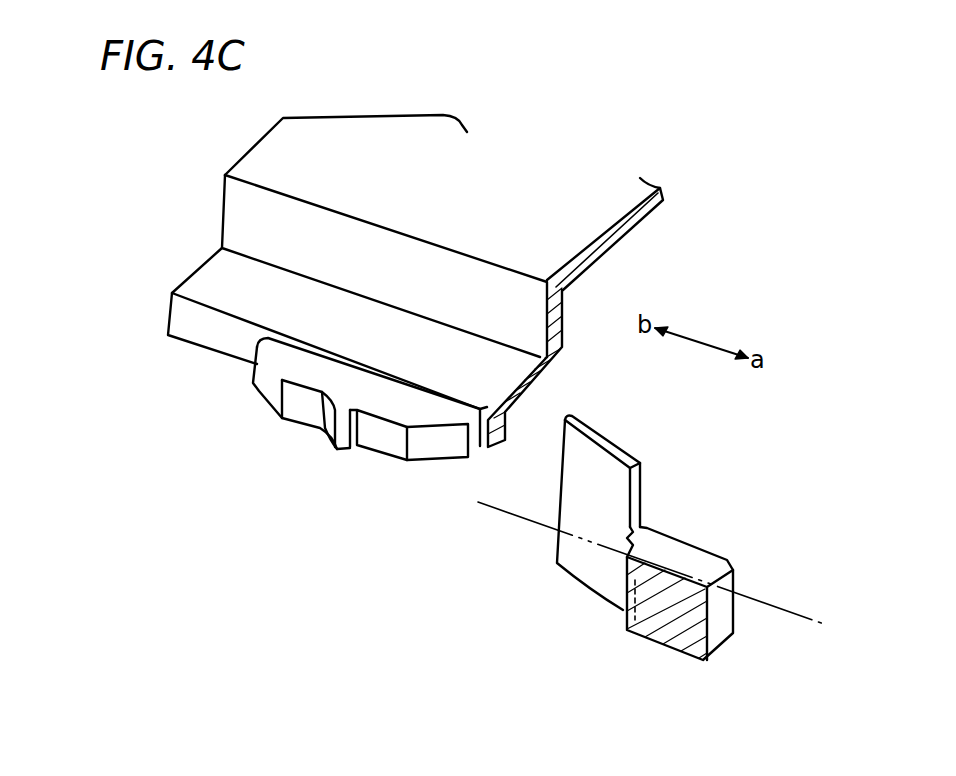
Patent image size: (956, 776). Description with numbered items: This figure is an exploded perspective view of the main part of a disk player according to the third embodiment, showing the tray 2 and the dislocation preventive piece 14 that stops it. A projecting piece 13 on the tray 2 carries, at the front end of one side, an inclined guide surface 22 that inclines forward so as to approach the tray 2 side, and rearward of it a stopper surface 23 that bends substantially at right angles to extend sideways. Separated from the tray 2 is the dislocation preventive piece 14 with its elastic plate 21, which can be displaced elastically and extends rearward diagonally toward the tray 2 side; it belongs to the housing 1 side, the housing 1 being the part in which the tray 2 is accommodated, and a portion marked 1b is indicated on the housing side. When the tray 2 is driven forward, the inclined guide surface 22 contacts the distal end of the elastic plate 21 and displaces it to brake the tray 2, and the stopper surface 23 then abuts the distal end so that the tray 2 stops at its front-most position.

The tray 2 is at (245, 217).
The projecting piece 13 is at (327, 437).
The inclined guide surface 22 is at (435, 443).
The stopper surface 23 is at (351, 452).
The elastic plate 21 is at (600, 433).
The dislocation preventive piece 14 is at (683, 543).
The axis of base 1b is at (758, 597).
The housing 1 is at (656, 563).